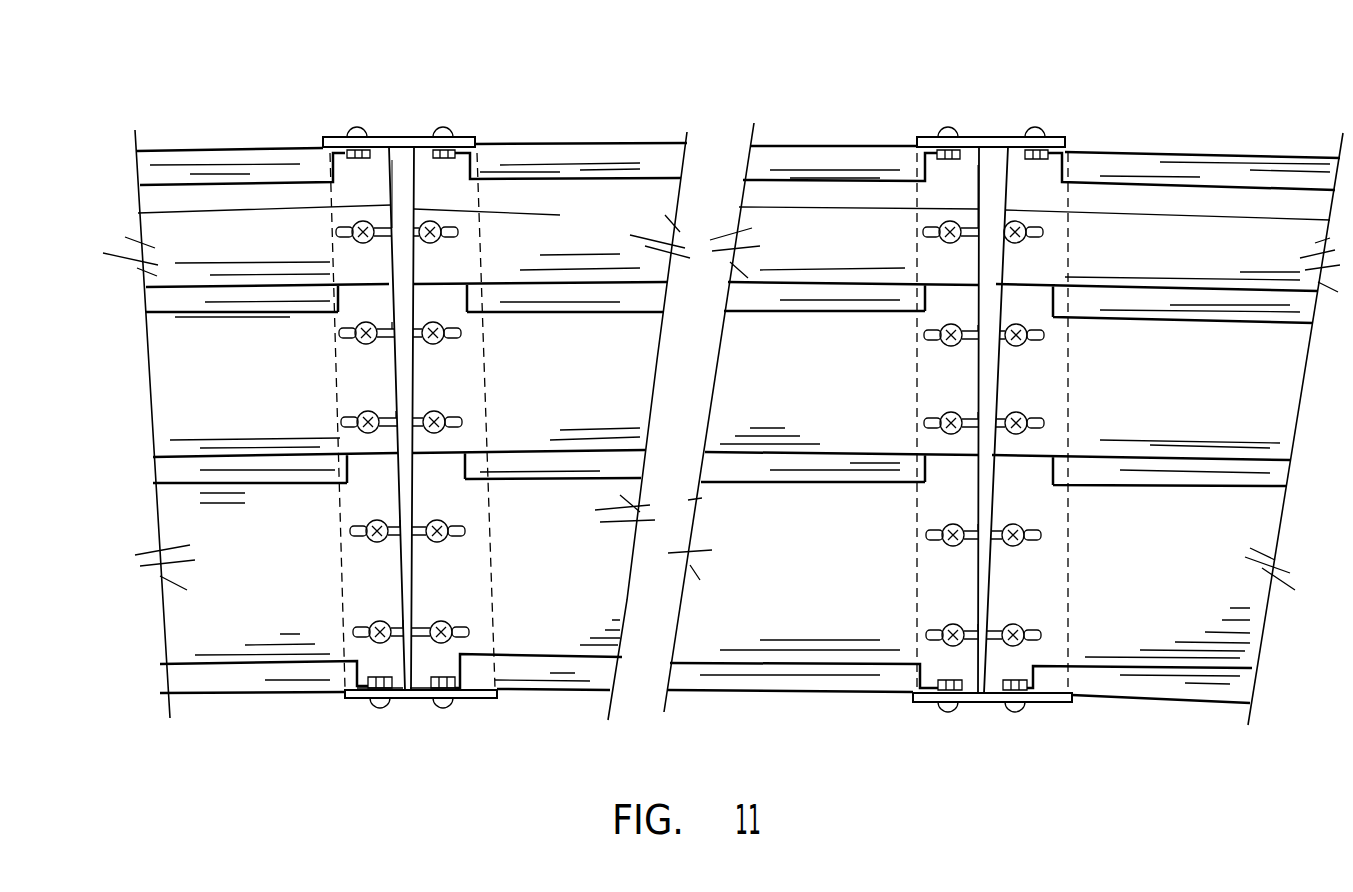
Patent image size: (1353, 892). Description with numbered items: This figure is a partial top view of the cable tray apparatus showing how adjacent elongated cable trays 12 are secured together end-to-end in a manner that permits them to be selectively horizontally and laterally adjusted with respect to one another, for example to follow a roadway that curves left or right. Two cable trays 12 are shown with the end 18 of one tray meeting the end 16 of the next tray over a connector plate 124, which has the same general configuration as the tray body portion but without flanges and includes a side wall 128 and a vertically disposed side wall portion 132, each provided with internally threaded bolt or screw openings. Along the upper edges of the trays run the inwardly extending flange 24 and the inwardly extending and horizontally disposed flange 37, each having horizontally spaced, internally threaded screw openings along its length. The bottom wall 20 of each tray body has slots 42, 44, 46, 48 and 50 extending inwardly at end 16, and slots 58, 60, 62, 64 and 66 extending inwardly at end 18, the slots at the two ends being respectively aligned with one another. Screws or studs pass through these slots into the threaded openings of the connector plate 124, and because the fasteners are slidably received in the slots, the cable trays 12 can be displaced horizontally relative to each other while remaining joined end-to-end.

The cable tray 12 is at (219, 147).
The end 16 is at (413, 498).
The end 18 is at (398, 156).
The bottom wall 20 is at (782, 390).
The inwardly extending flange 24 is at (308, 675).
The inwardly extending and horizontally disposed flange 37 is at (276, 150).
The slot 42 is at (458, 235).
The slot 44 is at (461, 334).
The slot 46 is at (462, 421).
The slot 48 is at (465, 531).
The slot 50 is at (469, 633).
The slot 58 is at (336, 232).
The slot 60 is at (348, 335).
The slot 62 is at (341, 421).
The slot 64 is at (350, 533).
The slot 66 is at (360, 630).
The connector plate 124 is at (467, 700).
The side wall 128 is at (482, 698).
The vertically disposed side wall portion 132 is at (336, 140).